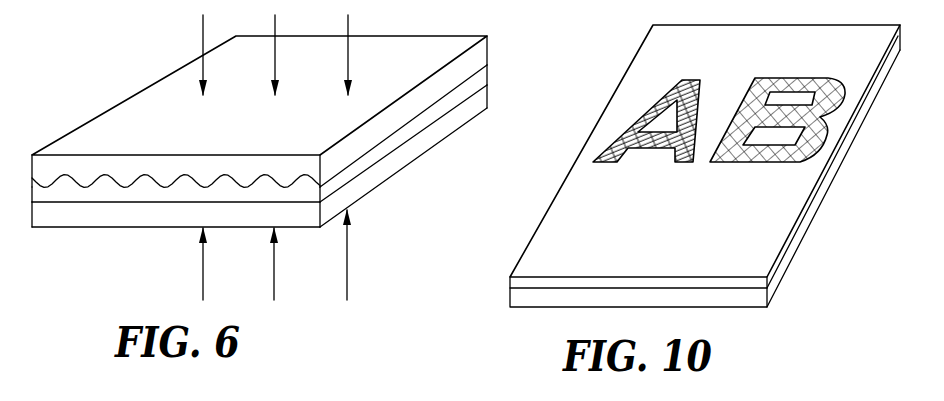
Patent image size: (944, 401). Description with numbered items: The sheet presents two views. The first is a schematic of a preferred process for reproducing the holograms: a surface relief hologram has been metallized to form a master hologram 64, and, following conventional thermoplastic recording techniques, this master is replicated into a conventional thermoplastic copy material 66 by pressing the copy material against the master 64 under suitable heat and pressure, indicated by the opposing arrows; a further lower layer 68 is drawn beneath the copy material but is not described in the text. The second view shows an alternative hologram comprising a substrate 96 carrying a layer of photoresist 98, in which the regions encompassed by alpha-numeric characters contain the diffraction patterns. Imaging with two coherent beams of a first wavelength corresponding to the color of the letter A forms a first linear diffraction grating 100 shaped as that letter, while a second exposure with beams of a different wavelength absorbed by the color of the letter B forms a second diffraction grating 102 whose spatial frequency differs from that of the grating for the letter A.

In FIG. 6, the master hologram 64 is at (132, 108).
In FIG. 6, the thermoplastic copy material 66 is at (40, 193).
In FIG. 6, the bottom layer 68 is at (55, 218).
In FIG. 10, the substrate 96 is at (513, 301).
In FIG. 10, the layer of photoresist 98 is at (542, 233).
In FIG. 10, the first linear diffraction grating 100 is at (688, 79).
In FIG. 10, the second diffraction grating 102 is at (813, 80).